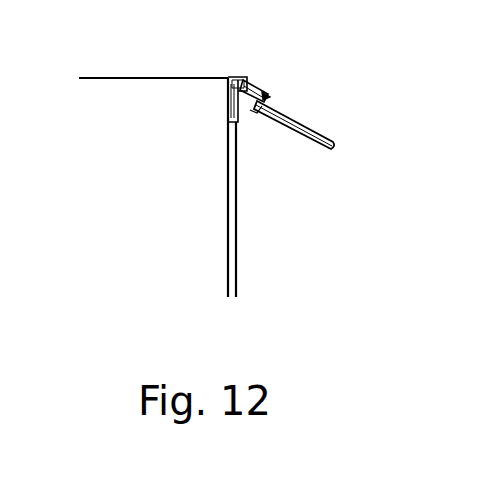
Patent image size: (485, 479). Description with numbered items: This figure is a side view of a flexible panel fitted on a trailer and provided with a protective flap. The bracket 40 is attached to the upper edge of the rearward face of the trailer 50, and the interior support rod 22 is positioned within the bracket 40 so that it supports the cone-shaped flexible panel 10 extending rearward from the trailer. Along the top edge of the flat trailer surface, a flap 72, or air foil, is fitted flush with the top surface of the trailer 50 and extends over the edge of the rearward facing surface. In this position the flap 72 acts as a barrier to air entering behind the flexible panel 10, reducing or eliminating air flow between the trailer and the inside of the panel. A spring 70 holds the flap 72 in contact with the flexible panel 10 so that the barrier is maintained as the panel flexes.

The flexible panel 10 is at (316, 127).
The support rod 22 is at (294, 129).
The bracket 40 is at (228, 98).
The trailer 50 is at (172, 212).
The spring 70 is at (235, 78).
The flap 72 is at (266, 82).